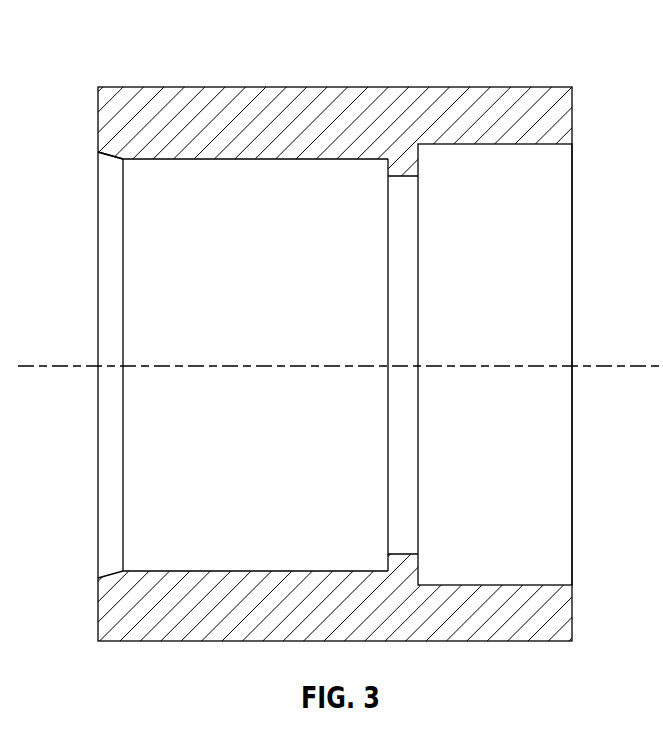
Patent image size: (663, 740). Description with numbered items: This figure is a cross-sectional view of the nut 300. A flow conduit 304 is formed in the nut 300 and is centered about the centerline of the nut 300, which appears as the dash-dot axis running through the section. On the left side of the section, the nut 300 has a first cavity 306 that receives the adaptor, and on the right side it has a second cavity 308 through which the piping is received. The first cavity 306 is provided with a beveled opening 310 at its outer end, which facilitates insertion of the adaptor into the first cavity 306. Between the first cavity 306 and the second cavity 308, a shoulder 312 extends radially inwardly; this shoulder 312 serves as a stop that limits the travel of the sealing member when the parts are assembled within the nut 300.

The nut 300 is at (116, 31).
The flow conduit 304 is at (277, 478).
The first cavity 306 is at (277, 277).
The second cavity 308 is at (523, 277).
The beveled opening 310 is at (110, 154).
The shoulder 312 is at (406, 176).